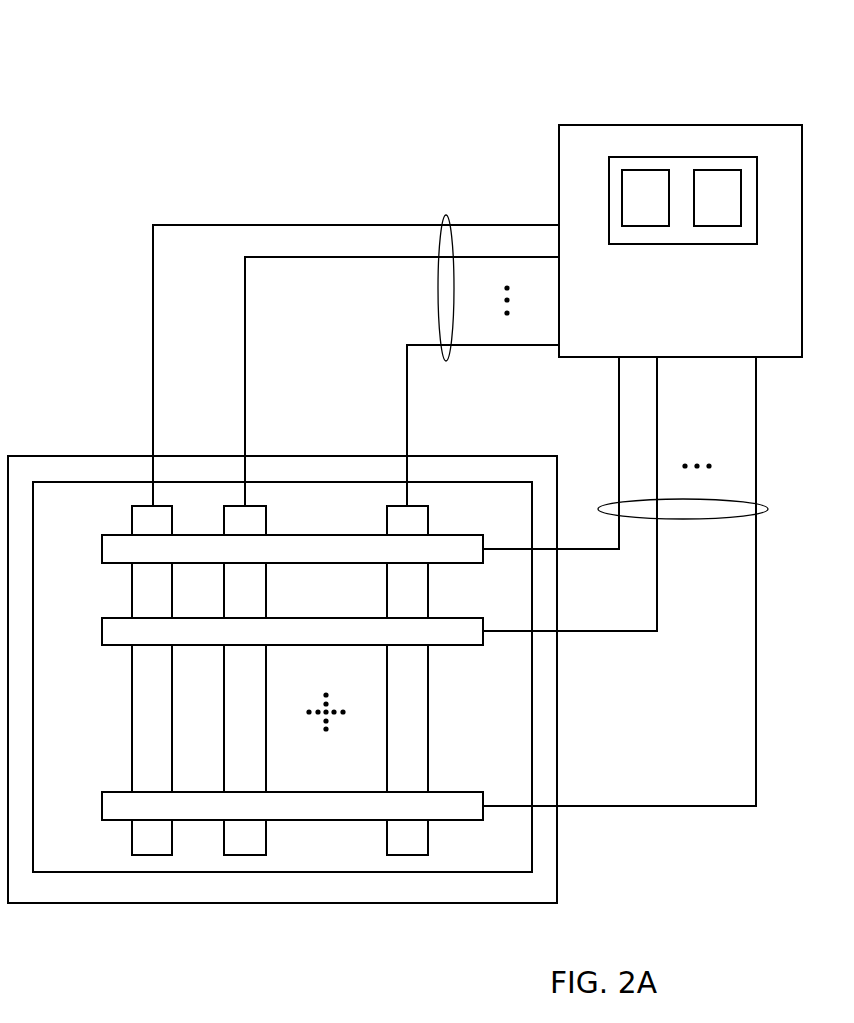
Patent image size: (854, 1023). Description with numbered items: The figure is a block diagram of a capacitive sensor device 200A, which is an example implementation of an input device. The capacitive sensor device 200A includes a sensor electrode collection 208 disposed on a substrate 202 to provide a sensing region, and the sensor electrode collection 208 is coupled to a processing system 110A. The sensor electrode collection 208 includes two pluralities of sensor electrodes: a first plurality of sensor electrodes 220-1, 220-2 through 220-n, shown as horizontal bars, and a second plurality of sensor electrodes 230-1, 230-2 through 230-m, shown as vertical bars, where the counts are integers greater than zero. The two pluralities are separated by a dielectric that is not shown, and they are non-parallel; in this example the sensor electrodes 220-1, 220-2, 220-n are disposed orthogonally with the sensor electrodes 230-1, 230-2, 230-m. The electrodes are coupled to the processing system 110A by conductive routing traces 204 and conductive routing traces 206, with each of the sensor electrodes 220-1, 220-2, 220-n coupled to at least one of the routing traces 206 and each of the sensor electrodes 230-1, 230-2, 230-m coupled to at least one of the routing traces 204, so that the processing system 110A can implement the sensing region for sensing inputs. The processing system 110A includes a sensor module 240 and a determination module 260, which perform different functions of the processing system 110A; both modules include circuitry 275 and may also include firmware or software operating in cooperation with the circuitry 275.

The capacitive sensor device 200A is at (114, 62).
The substrate 202 is at (85, 904).
The sensor electrode collection 208 is at (170, 874).
The sensor electrode 220-1 is at (121, 535).
The sensor electrode 220-2 is at (441, 618).
The sensor electrode 220-n is at (307, 792).
The sensor electrode 230-1 is at (132, 848).
The sensor electrode 230-2 is at (266, 848).
The sensor electrode 230-m is at (428, 838).
The conductive routing traces 204 is at (446, 215).
The conductive routing traces 206 is at (768, 509).
The processing system 110A is at (680, 216).
The circuitry 275 is at (632, 157).
The sensor module 240 is at (645, 198).
The determination module 260 is at (717, 198).